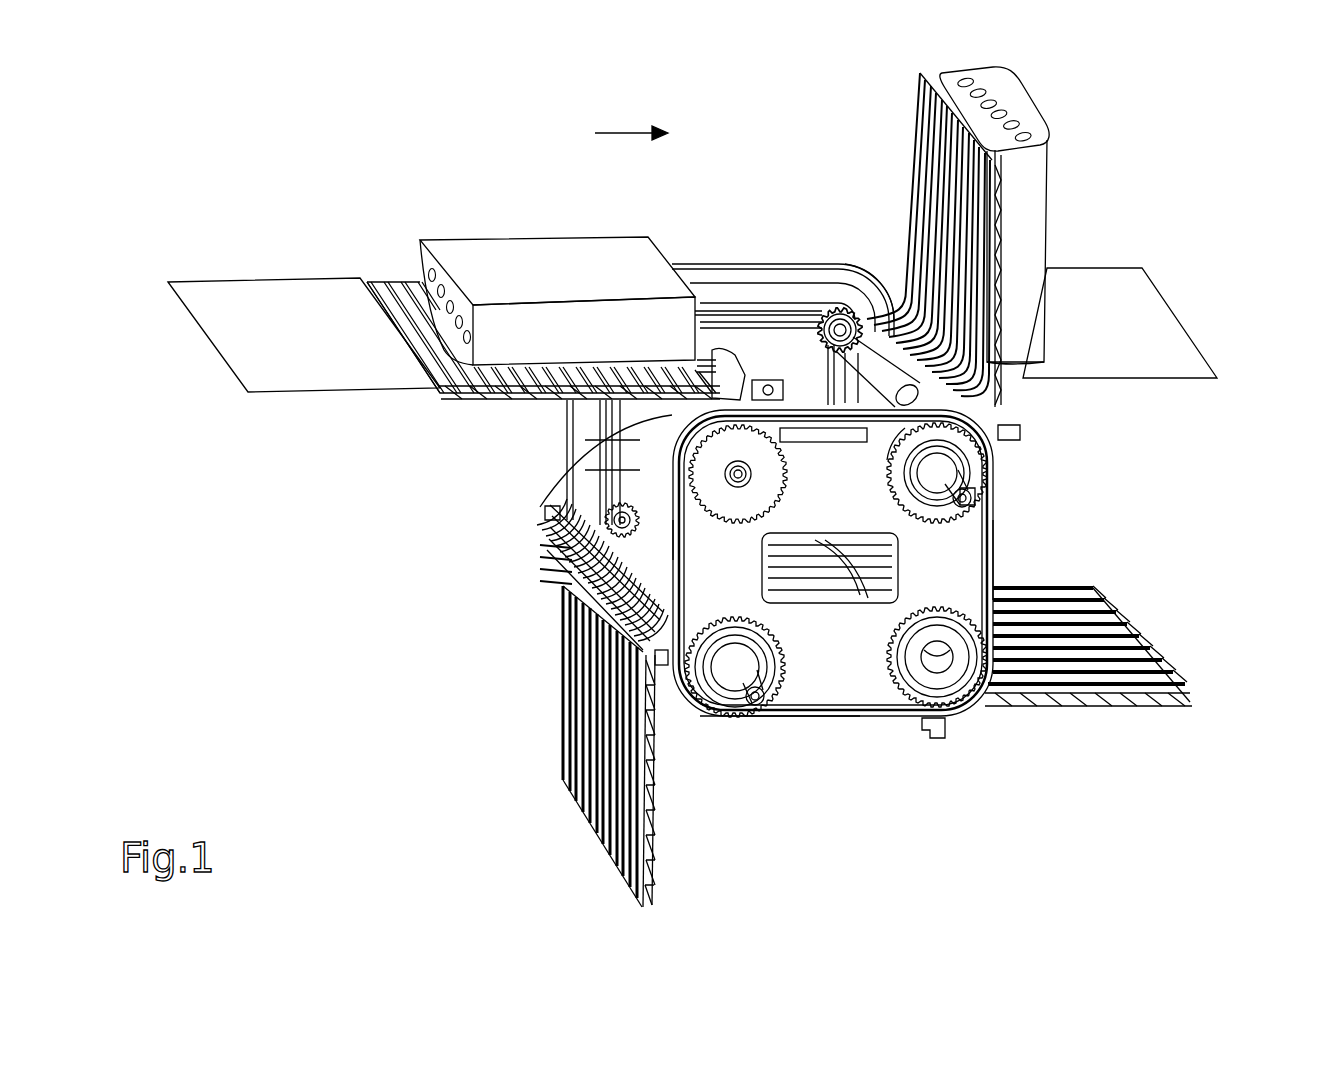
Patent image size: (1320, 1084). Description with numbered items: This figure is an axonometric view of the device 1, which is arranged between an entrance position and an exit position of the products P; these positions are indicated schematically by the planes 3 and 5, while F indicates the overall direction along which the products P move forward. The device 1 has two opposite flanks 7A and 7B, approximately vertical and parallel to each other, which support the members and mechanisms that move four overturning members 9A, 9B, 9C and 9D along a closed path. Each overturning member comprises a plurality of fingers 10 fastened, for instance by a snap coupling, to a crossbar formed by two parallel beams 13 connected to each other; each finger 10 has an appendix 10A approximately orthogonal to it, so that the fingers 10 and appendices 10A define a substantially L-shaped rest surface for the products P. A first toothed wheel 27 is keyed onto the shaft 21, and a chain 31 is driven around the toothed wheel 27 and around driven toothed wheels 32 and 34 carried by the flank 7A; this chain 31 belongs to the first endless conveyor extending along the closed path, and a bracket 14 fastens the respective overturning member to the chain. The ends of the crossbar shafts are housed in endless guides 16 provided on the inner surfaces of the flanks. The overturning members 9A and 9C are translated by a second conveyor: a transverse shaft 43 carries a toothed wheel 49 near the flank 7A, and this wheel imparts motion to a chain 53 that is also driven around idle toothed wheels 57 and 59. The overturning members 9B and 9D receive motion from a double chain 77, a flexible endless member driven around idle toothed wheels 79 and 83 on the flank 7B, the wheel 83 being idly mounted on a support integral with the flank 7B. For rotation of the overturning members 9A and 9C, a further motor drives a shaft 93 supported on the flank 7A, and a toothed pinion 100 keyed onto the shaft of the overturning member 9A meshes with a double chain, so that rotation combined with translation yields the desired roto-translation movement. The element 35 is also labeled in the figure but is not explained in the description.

The device 1 is at (1180, 192).
The plane 3 is at (298, 380).
The plane 5 is at (1140, 372).
The flank 7A is at (985, 548).
The flank 7B is at (730, 272).
The overturning member 9A is at (900, 133).
The overturning member 9B is at (1115, 588).
The overturning member 9C is at (665, 789).
The overturning member 9D is at (478, 410).
The finger 10 is at (455, 378).
The appendix 10A is at (735, 362).
The beam 13 is at (552, 590).
The bracket 14 is at (748, 380).
The endless guide 16 is at (868, 280).
The shaft 21 is at (753, 478).
The first toothed wheel 27 is at (750, 508).
The chain 31 is at (685, 563).
The driven toothed wheel 32 is at (776, 692).
The driven toothed wheel 34 is at (893, 705).
The gear wheel 35 is at (893, 487).
The transverse shaft 43 is at (852, 330).
The toothed wheel 49 is at (885, 445).
The chain 53 is at (580, 482).
The idle toothed wheel 57 is at (870, 690).
The idle toothed wheel 59 is at (735, 625).
The double chain 77 is at (785, 308).
The idle toothed wheel 79 is at (826, 312).
The toothed wheel 83 is at (618, 512).
The shaft 93 is at (730, 700).
The toothed pinion 100 is at (600, 620).
The product P is at (515, 248).
The direction F is at (604, 135).